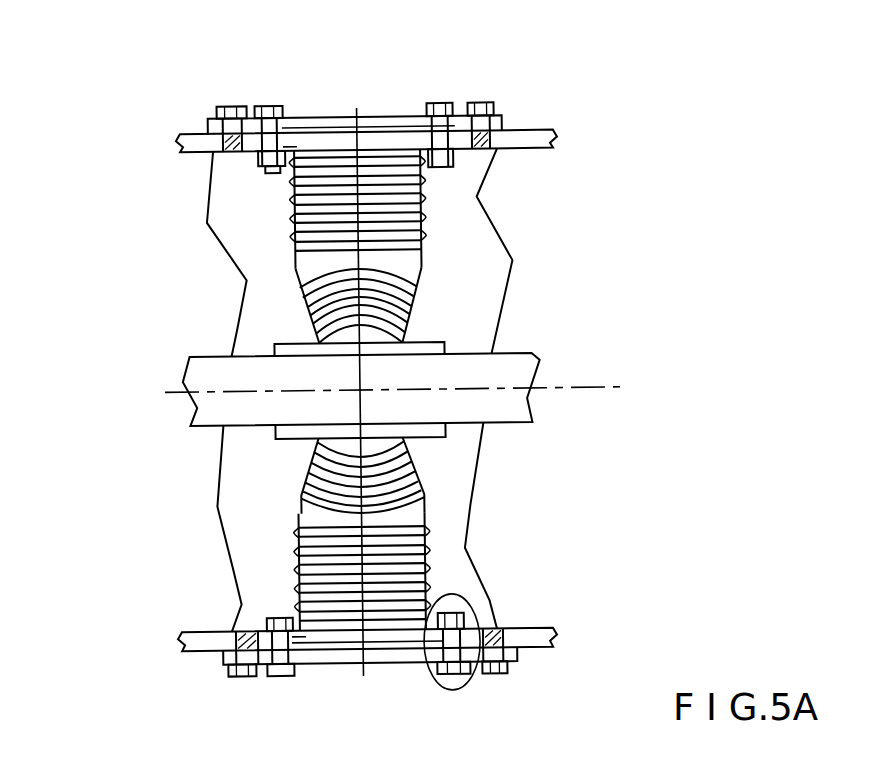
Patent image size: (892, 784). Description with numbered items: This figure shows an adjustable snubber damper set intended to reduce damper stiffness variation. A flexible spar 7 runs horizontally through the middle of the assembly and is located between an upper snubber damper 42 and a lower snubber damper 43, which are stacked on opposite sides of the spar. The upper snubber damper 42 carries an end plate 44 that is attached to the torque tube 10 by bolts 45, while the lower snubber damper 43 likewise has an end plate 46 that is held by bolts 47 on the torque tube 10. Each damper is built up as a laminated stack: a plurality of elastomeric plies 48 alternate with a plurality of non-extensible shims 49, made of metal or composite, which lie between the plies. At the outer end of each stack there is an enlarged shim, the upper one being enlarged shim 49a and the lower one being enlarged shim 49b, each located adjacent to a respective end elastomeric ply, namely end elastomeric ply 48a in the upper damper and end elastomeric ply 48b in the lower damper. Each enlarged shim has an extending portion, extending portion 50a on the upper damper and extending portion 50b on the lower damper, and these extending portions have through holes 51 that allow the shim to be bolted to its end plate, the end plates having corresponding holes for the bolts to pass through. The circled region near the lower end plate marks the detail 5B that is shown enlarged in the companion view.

The flexible spar 7 is at (525, 379).
The torque tube 10 is at (556, 142).
The upper snubber damper 42 is at (414, 266).
The lower snubber damper 43 is at (414, 516).
The end plate 44 is at (396, 127).
The bolts 45 is at (491, 103).
The end plate 46 is at (394, 658).
The bolts 47 is at (246, 676).
The elastomeric plies 48 is at (415, 224).
The end elastomeric ply 48a is at (325, 110).
The end elastomeric ply 48b is at (354, 645).
The non-extensible shims 49 is at (297, 215).
The enlarged shim 49a is at (419, 53).
The enlarged shim 49b is at (302, 633).
The extending portion 50a is at (254, 105).
The extending portion 50b is at (258, 679).
The through holes 51 is at (458, 112).
The detail view reference 5B is at (420, 694).